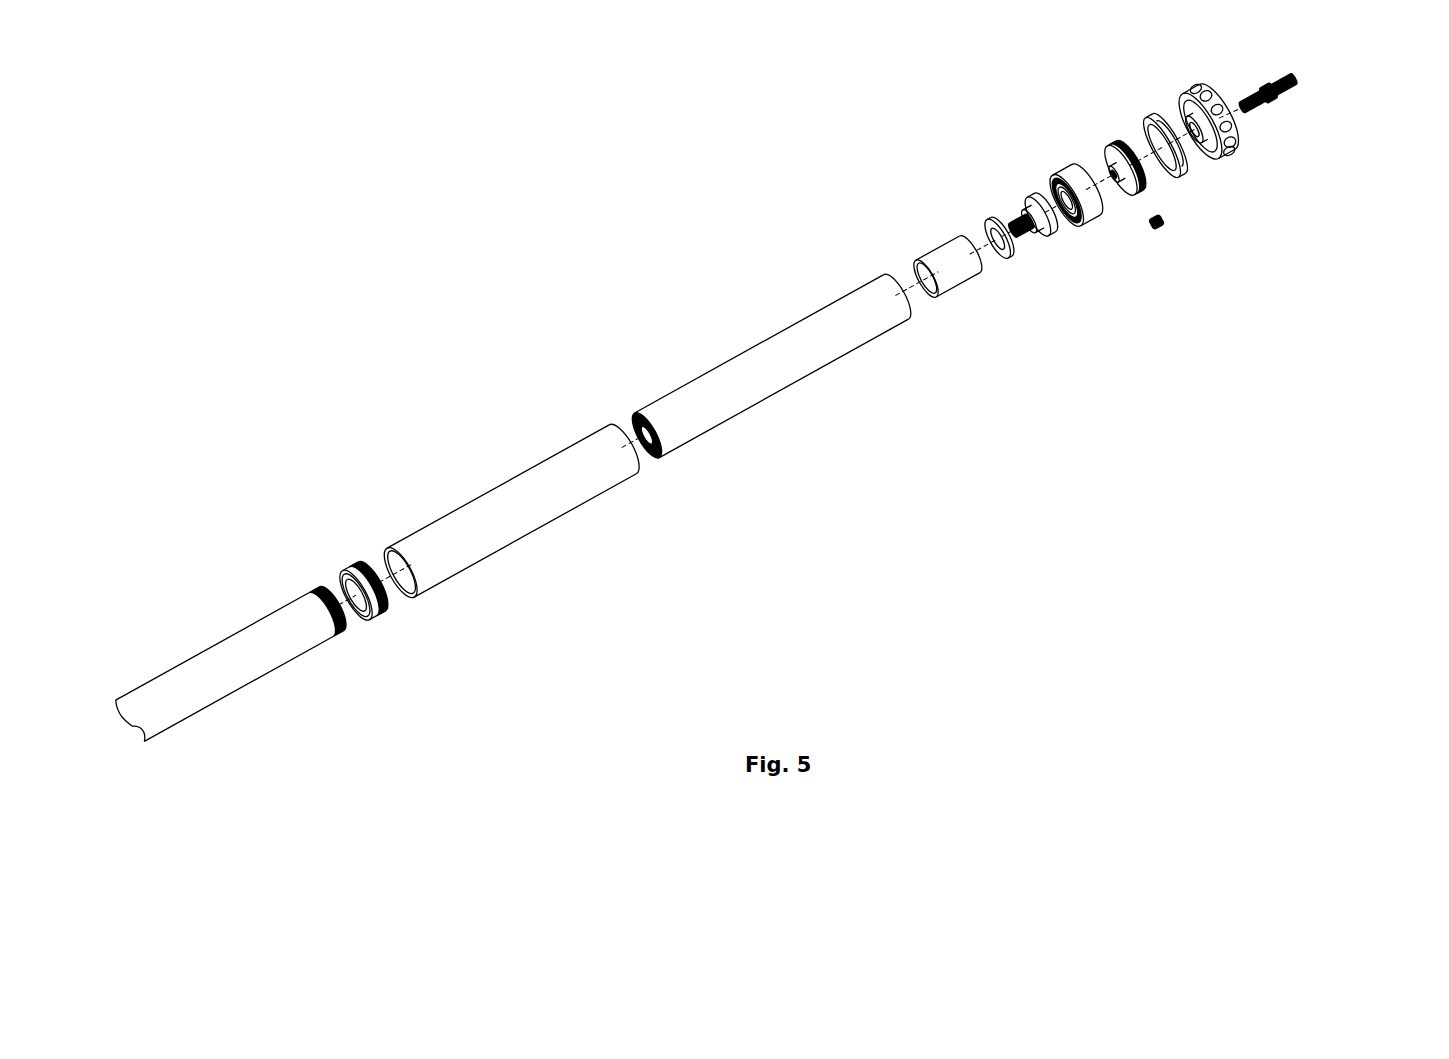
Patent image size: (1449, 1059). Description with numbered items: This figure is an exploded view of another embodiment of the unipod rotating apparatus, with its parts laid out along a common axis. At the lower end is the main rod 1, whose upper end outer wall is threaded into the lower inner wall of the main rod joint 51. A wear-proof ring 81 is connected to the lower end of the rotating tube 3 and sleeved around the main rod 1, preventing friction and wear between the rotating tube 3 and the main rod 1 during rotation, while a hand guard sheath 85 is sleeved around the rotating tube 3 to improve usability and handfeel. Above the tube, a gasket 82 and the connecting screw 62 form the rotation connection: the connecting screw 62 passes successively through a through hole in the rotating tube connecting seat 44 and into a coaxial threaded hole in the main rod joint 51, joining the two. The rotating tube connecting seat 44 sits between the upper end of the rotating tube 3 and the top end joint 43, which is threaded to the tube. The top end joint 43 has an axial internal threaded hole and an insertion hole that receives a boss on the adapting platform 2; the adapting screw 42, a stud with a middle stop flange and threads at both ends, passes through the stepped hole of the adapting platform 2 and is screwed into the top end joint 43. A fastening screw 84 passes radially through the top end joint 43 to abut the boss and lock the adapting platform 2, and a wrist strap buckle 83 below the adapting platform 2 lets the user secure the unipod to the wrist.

The main rod 1 is at (218, 668).
The wear-proof ring 81 is at (383, 613).
The hand guard sheath 85 is at (561, 520).
The rotating tube 3 is at (765, 393).
The main rod joint 51 is at (944, 262).
The gasket 82 is at (988, 226).
The connecting screw 62 is at (1023, 211).
The rotating tube connecting seat 44 is at (1083, 223).
The top end joint 43 is at (1140, 193).
The wrist strap buckle 83 is at (1183, 183).
The fastening screw 84 is at (1161, 229).
The adapting platform 2 is at (1236, 158).
The adapting screw 42 is at (1270, 102).